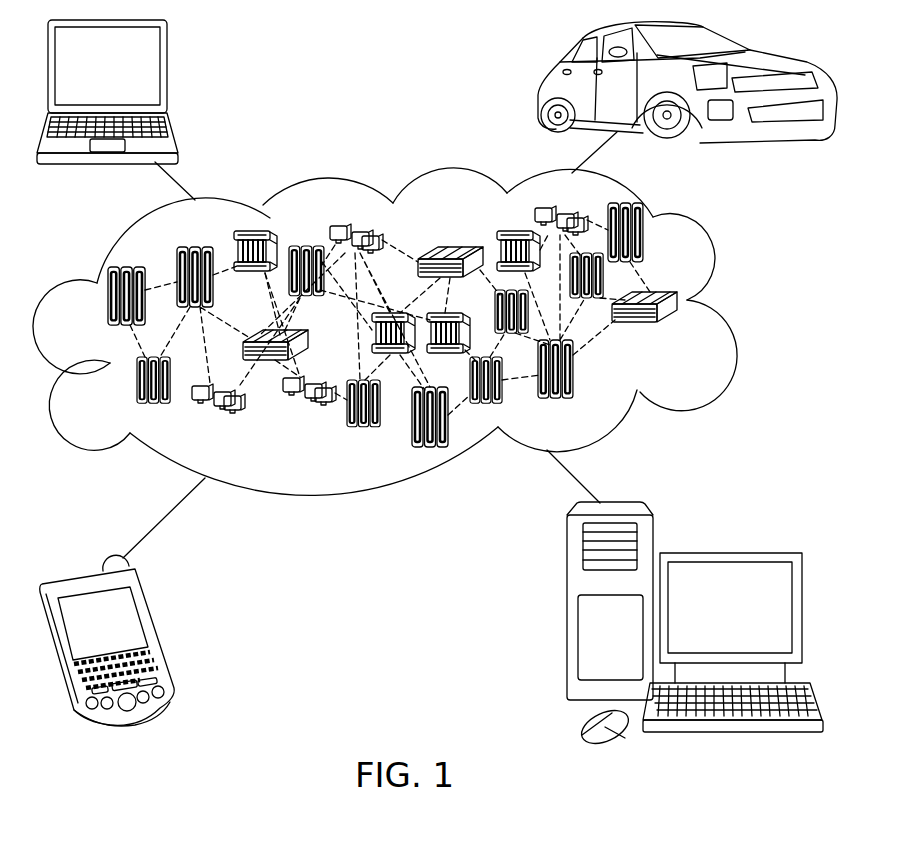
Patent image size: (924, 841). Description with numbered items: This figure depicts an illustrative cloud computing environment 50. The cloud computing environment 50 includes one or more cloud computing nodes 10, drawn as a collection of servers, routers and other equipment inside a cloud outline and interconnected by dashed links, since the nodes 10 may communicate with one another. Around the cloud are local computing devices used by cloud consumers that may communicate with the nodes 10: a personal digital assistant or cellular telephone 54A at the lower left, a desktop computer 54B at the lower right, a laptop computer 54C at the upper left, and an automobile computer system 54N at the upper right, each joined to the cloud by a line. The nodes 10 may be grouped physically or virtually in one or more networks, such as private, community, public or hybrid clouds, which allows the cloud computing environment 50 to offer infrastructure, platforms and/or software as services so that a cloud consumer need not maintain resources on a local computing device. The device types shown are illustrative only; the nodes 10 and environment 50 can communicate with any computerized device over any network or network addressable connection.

The cloud computing nodes 10 is at (683, 334).
The cloud computing environment 50 is at (727, 307).
The personal digital assistant (PDA) or cellular telephone 54A is at (162, 632).
The desktop computer 54B is at (727, 552).
The laptop computer 54C is at (167, 70).
The automobile computer system 54N is at (542, 83).